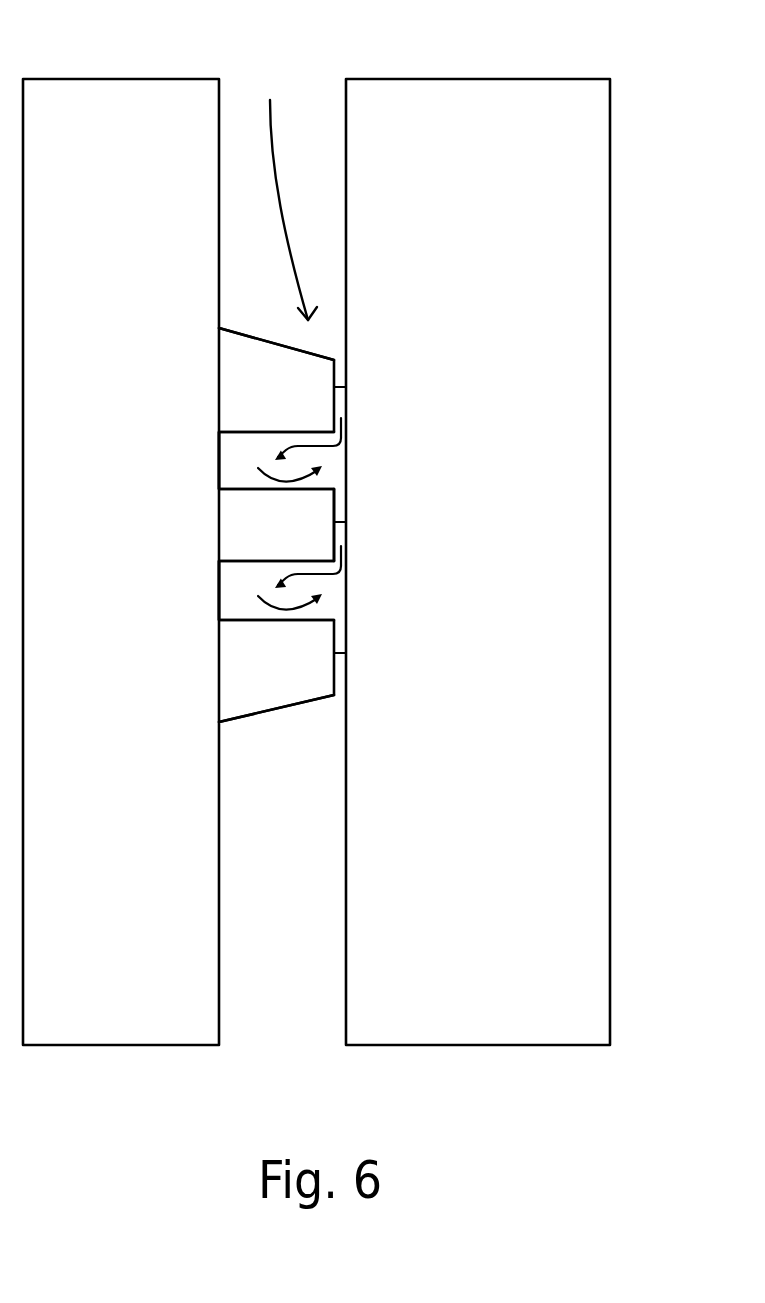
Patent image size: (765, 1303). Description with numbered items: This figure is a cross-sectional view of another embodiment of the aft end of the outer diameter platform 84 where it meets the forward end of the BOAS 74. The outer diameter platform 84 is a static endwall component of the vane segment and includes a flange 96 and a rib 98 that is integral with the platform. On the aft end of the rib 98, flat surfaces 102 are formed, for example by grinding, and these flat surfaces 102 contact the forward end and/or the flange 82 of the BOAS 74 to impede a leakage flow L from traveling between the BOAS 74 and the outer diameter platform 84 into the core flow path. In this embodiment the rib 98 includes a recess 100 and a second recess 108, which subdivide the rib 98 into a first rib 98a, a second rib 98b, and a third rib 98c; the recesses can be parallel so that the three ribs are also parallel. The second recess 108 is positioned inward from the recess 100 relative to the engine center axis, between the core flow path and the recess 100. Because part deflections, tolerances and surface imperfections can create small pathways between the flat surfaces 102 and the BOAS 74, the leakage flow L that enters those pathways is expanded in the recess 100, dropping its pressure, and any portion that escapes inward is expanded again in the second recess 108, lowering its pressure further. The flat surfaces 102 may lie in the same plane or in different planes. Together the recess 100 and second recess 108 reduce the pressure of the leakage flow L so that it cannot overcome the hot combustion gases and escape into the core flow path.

The flange 96 is at (84, 115).
The flange 82 is at (478, 103).
The leakage flow L is at (272, 142).
The rib 98 is at (240, 722).
The first rib 98a is at (291, 393).
The second rib 98b is at (267, 670).
The third rib 98c is at (273, 524).
The recess 100 is at (243, 458).
The second recess 108 is at (242, 590).
The flat surface 102 is at (334, 387).
The outer diameter platform 84 is at (104, 982).
The BOAS 74 is at (484, 968).